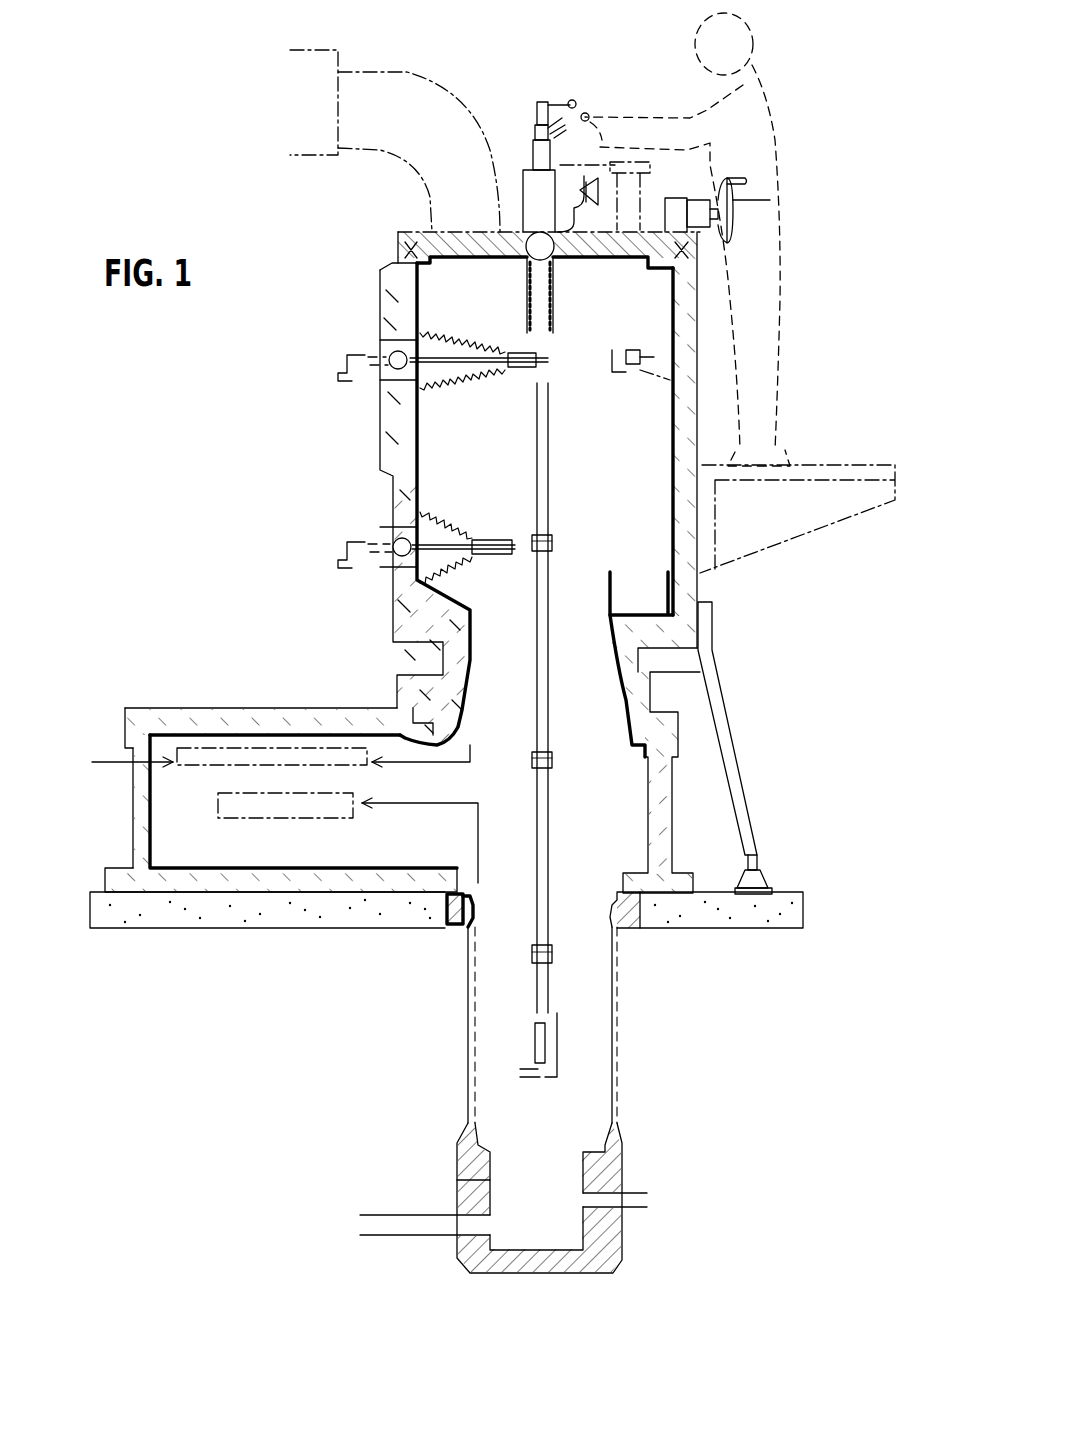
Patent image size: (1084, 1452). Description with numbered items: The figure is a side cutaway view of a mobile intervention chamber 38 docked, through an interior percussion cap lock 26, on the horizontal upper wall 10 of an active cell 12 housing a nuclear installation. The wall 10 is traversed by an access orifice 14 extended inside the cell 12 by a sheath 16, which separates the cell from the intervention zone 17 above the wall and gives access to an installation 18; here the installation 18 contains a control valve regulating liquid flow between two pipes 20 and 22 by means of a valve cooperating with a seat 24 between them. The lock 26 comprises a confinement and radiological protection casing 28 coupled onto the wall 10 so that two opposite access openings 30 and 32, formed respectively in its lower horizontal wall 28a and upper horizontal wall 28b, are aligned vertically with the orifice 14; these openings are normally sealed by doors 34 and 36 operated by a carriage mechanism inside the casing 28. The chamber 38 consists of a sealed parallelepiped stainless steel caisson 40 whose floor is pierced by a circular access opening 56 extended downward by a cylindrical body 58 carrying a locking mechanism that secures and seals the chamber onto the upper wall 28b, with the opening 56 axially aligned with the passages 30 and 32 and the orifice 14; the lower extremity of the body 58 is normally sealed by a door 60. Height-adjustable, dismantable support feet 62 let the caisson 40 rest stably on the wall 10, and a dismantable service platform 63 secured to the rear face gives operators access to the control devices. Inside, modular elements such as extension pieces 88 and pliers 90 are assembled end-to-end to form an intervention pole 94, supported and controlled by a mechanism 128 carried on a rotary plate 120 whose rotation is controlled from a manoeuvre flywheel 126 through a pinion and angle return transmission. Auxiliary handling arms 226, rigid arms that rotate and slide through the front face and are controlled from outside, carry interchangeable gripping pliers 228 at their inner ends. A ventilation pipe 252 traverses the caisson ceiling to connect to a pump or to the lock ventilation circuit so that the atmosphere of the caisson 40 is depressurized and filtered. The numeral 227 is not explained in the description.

The upper wall 10 is at (792, 897).
The active cell 12 is at (781, 988).
The access orifice 14 is at (478, 903).
The sheath 16 is at (467, 1030).
The intervention zone 17 is at (274, 524).
The installation 18 is at (632, 1233).
The pipe 20 is at (405, 1213).
The pipe 22 is at (630, 1190).
The seat 24 is at (480, 1152).
The lock 26 is at (200, 706).
The confinement and radiological protection casing 28 is at (135, 808).
The lower horizontal wall 28a is at (300, 880).
The upper horizontal wall 28b is at (250, 708).
The access opening 30 is at (622, 882).
The access opening 32 is at (633, 747).
The door 34 is at (255, 818).
The door 36 is at (90, 784).
The mobile intervention chamber 38 is at (372, 296).
The sealed caisson 40 is at (705, 380).
The access opening 56 is at (603, 628).
The cylindrical body 58 is at (445, 672).
The door 60 is at (59, 772).
The support feet 62 is at (748, 822).
The service platform 63 is at (858, 466).
The extension pieces 88 is at (548, 577).
The pliers 90 is at (560, 1003).
The intervention pole 94 is at (520, 703).
The rotary plate 120 is at (442, 232).
The manoeuvre flywheel 126 is at (770, 200).
The mechanism 128 is at (542, 155).
The auxiliary handling arms 226 is at (473, 366).
The ball detent 227 is at (371, 366).
The interchangeable gripping pliers 228 is at (620, 348).
The ventilation pipe 252 is at (407, 72).